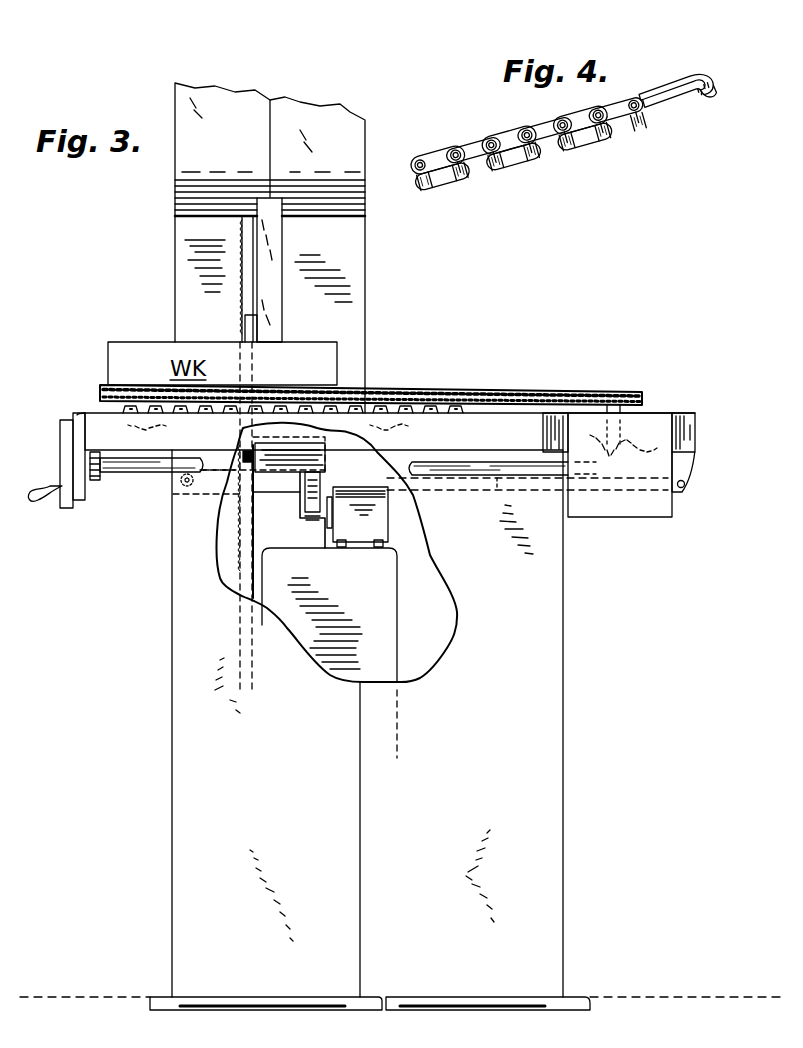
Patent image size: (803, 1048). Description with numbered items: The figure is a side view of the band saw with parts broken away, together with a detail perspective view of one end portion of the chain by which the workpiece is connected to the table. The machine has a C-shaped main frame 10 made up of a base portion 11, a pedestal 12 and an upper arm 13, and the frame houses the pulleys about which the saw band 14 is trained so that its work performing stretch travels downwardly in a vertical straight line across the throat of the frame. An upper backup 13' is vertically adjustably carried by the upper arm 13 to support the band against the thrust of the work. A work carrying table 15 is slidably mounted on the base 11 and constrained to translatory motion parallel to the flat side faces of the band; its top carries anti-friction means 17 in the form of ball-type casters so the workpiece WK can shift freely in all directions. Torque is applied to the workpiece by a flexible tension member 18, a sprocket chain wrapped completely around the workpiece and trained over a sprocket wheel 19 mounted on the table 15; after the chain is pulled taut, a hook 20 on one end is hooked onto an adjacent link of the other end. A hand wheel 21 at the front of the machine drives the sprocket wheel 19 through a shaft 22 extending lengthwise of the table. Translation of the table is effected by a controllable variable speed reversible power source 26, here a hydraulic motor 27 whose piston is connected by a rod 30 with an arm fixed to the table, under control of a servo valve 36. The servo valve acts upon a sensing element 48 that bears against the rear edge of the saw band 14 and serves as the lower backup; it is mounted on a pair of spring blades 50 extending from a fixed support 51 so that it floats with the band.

In FIG. 3, the main frame 10 is at (143, 292).
In FIG. 3, the base portion 11 is at (282, 823).
In FIG. 3, the pedestal 12 is at (352, 272).
In FIG. 3, the upper arm 13 is at (270, 248).
In FIG. 3, the upper backup 13' is at (296, 270).
In FIG. 3, the saw band 14 is at (248, 297).
In FIG. 3, the work carrying table 15 is at (485, 412).
In FIG. 3, the anti-friction means 17 is at (122, 407).
In FIG. 3, the tension member 18 is at (382, 388).
In FIG. 4, the tension member 18 is at (584, 112).
In FIG. 3, the sprocket wheel 19 is at (620, 404).
In FIG. 4, the hook 20 is at (726, 58).
In FIG. 3, the hand wheel 21 is at (62, 478).
In FIG. 3, the shaft 22 is at (453, 473).
In FIG. 3, the power source 26 is at (278, 503).
In FIG. 3, the hydraulic motor 27 is at (230, 490).
In FIG. 3, the rod 30 is at (549, 480).
In FIG. 3, the servo valve 36 is at (371, 522).
In FIG. 3, the sensing element 48 is at (262, 447).
In FIG. 3, the spring blades 50 is at (312, 520).
In FIG. 3, the fixed support 51 is at (318, 525).